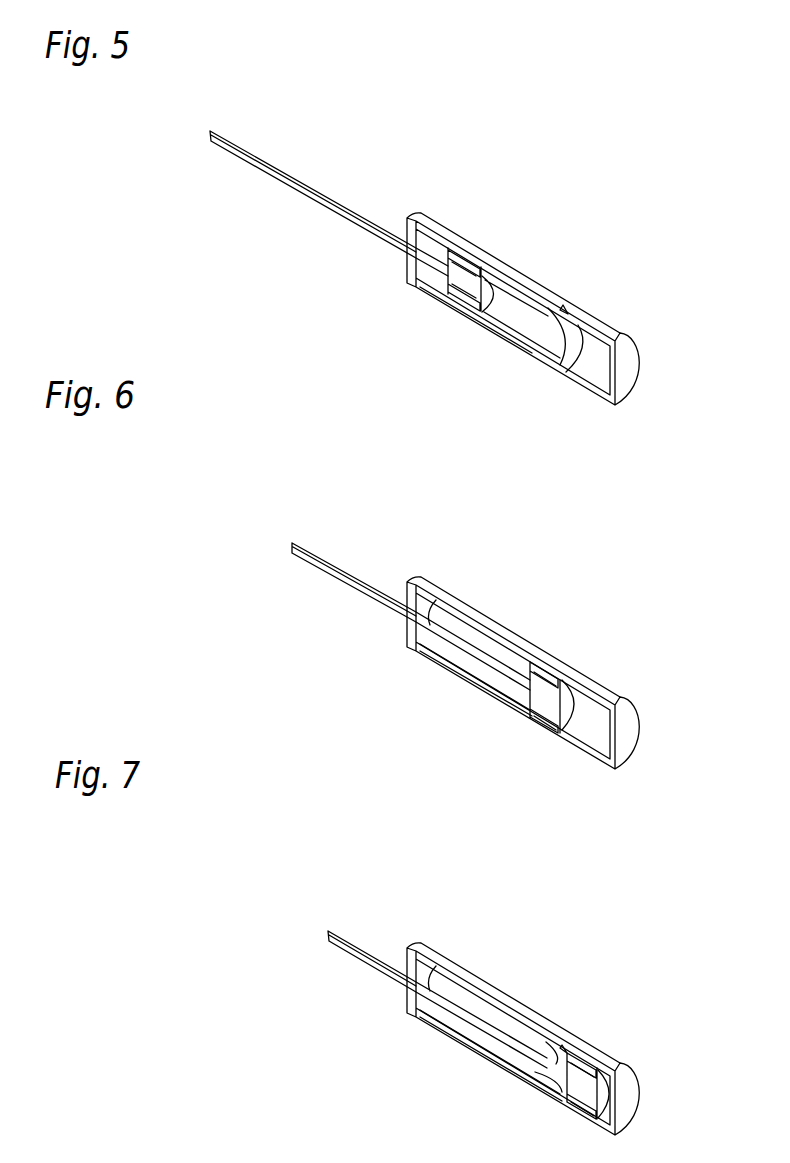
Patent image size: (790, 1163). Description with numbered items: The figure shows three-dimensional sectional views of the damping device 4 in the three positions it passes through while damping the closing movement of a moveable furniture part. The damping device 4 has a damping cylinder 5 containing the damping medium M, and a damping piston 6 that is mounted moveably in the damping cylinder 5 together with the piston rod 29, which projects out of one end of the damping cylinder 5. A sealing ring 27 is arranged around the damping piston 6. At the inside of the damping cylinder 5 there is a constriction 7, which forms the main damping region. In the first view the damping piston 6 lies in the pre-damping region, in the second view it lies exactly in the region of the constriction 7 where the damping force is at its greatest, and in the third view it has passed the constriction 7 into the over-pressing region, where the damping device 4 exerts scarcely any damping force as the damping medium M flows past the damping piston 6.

In FIG. 5, the damping device 4 is at (517, 192).
In FIG. 6, the damping device 4 is at (553, 618).
In FIG. 7, the damping device 4 is at (575, 982).
In FIG. 5, the damping cylinder 5 is at (593, 327).
In FIG. 6, the damping cylinder 5 is at (523, 673).
In FIG. 7, the damping cylinder 5 is at (523, 1039).
In FIG. 5, the damping piston 6 is at (470, 290).
In FIG. 6, the damping piston 6 is at (548, 705).
In FIG. 7, the damping piston 6 is at (582, 1086).
In FIG. 5, the constriction 7 is at (552, 343).
In FIG. 6, the constriction 7 is at (545, 718).
In FIG. 7, the constriction 7 is at (572, 1080).
In FIG. 5, the sealing ring 27 is at (466, 262).
In FIG. 6, the sealing ring 27 is at (601, 676).
In FIG. 7, the sealing ring 27 is at (635, 1098).
In FIG. 5, the piston rod 29 is at (298, 178).
In FIG. 6, the piston rod 29 is at (412, 629).
In FIG. 7, the piston rod 29 is at (445, 1016).
In FIG. 5, the damping medium M is at (522, 325).